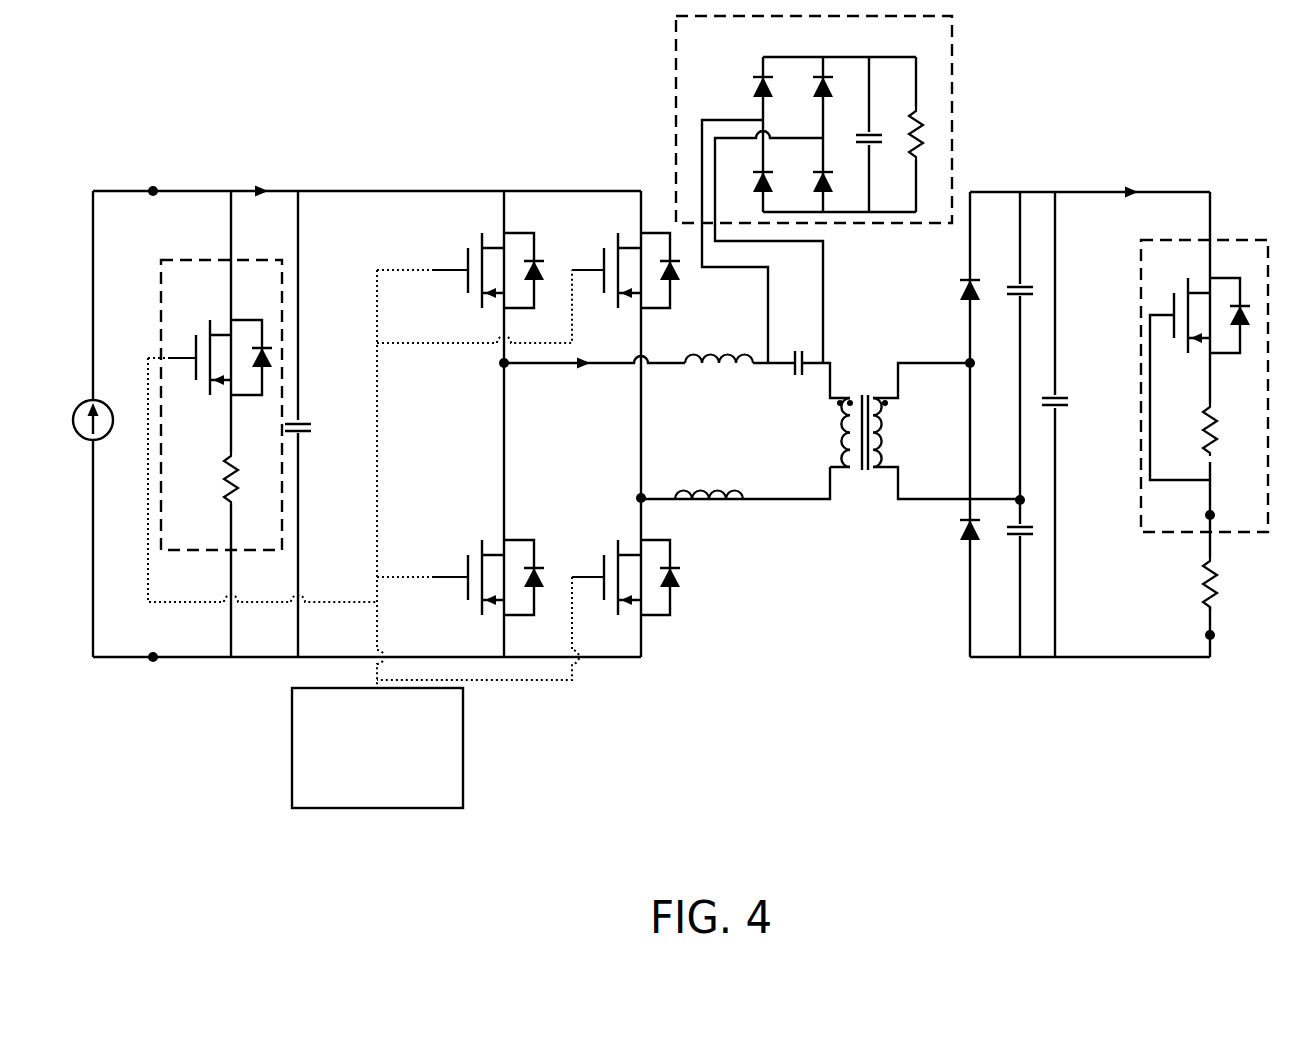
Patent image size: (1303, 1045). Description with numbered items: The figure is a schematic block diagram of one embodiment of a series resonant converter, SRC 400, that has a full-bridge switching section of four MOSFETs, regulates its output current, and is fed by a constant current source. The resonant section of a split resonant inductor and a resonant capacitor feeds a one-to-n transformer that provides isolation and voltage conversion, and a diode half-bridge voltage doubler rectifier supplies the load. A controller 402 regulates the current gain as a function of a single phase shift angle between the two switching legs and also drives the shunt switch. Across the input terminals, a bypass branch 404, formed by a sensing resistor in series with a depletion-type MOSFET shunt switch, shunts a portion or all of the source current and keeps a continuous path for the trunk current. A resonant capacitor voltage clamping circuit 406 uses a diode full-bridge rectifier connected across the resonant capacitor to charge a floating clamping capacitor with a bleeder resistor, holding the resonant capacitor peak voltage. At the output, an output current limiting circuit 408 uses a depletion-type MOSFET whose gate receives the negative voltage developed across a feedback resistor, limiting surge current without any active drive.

The SRC 400 is at (178, 161).
The controller 402 is at (358, 776).
The bypass branch 404 is at (215, 538).
The resonant capacitor voltage clamping circuit 406 is at (730, 47).
The output current limiting circuit 408 is at (1188, 525).